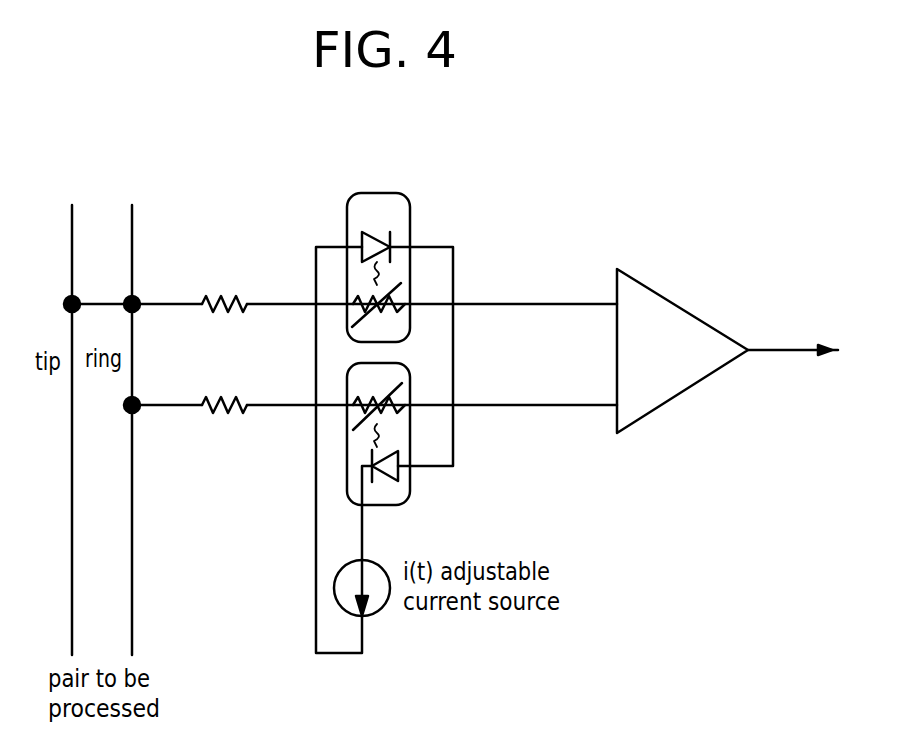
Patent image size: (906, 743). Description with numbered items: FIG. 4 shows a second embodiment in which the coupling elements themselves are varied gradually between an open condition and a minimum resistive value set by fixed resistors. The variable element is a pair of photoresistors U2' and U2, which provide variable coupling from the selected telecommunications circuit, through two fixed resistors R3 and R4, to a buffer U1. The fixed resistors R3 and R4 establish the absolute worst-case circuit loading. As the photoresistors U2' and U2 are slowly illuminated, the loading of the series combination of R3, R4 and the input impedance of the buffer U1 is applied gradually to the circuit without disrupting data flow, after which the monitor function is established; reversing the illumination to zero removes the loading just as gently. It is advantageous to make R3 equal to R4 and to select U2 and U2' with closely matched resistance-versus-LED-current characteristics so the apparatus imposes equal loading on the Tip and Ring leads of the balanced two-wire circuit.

The fixed resistor R3 is at (224, 279).
The fixed resistor R4 is at (224, 428).
The photoresistor U2' is at (425, 247).
The photoresistor U2 is at (421, 450).
The buffer U1 is at (677, 305).